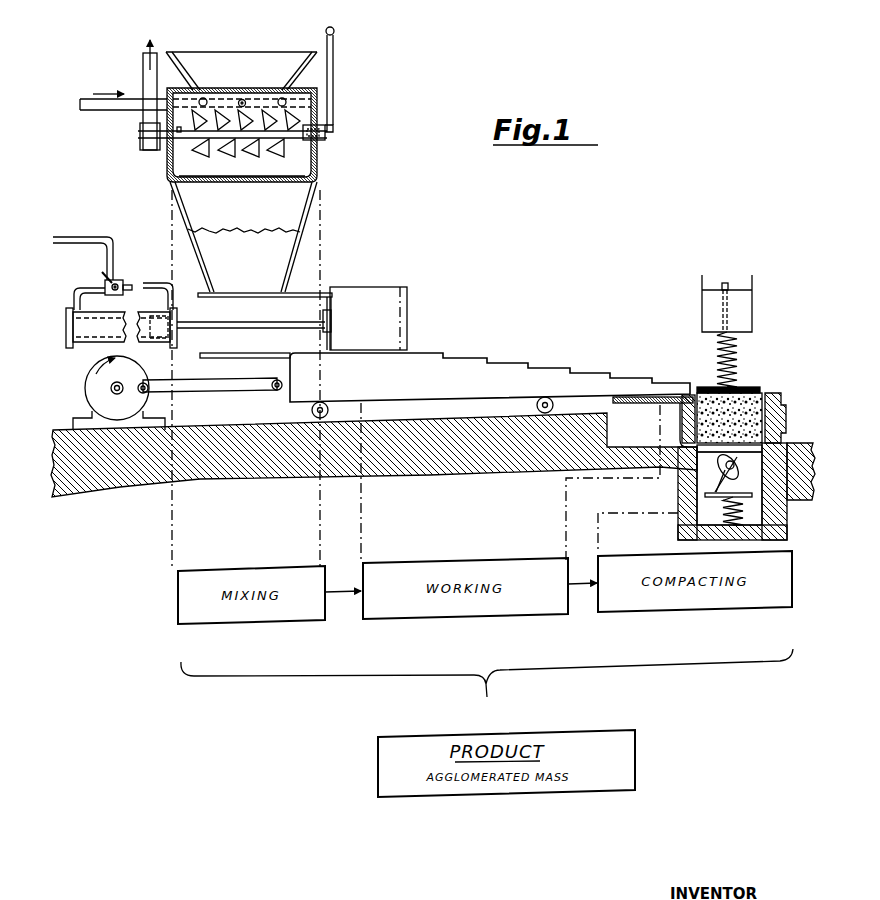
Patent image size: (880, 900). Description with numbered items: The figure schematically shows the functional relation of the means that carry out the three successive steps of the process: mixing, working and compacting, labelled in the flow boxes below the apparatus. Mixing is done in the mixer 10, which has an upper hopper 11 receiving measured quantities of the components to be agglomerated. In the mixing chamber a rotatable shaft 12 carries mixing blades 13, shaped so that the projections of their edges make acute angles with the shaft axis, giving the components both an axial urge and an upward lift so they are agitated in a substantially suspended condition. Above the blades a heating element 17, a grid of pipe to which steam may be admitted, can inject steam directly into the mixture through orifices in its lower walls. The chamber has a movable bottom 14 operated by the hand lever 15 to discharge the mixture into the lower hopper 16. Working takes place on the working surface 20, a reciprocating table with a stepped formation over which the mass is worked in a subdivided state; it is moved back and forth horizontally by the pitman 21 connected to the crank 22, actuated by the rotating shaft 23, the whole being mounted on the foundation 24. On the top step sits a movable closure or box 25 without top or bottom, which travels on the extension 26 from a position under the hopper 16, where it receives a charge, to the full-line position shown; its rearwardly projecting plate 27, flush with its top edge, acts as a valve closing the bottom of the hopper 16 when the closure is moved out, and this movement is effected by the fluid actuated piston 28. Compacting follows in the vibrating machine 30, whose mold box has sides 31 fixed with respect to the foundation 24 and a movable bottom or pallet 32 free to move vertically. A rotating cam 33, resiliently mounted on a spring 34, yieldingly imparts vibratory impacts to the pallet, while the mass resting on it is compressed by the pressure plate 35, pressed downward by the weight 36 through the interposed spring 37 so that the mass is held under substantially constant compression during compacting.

The mixer 10 is at (317, 100).
The upper hopper 11 is at (278, 52).
The rotatable shaft 12 is at (139, 137).
The mixing blades 13 is at (235, 154).
The movable bottom 14 is at (266, 178).
The hand lever 15 is at (334, 123).
The lower hopper 16 is at (198, 231).
The heating element 17 is at (246, 99).
The working surface 20 is at (508, 364).
The pitman 21 is at (222, 390).
The crank 22 is at (147, 383).
The rotating shaft 23 is at (116, 394).
The foundation 24 is at (142, 484).
The movable closure or box 25 is at (407, 298).
The extension 26 is at (230, 353).
The rearwardly projecting plate 27 is at (298, 292).
The fluid actuated piston 28 is at (68, 326).
The vibrating machine 30 is at (744, 410).
The sides 31 is at (786, 415).
The movable bottom or pallet 32 is at (738, 466).
The rotating cam 33 is at (741, 486).
The spring 34 is at (743, 513).
The pressure plate 35 is at (707, 387).
The weight 36 is at (752, 313).
The spring 37 is at (740, 355).